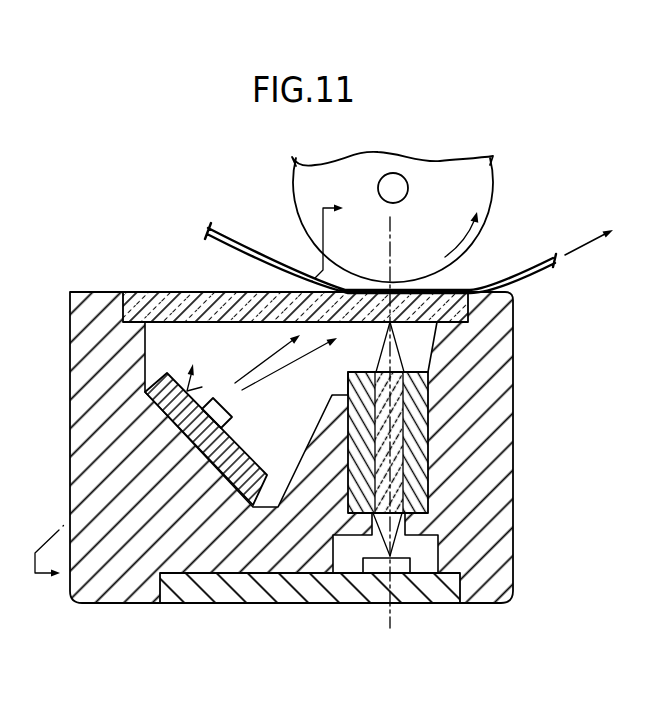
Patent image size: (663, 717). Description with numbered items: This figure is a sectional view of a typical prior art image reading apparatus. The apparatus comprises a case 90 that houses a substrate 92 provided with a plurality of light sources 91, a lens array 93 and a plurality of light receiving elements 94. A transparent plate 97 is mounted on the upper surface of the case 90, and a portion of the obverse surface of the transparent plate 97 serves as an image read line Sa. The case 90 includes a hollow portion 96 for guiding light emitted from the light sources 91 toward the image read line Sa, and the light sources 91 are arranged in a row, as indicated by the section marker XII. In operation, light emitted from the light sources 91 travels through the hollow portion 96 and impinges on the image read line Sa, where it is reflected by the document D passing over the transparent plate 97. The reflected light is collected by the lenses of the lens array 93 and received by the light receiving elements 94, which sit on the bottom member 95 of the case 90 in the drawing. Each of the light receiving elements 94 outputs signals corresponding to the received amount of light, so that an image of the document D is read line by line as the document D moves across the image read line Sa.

The case 90 is at (502, 428).
The light sources 91 is at (229, 413).
The substrate 92 is at (240, 430).
The lens array 93 is at (427, 465).
The light receiving elements 94 is at (410, 563).
The sensor substrate plate 95 is at (430, 593).
The hollow portion 96 is at (222, 348).
The transparent plate 97 is at (167, 303).
The image read line Sa is at (390, 293).
The document D is at (530, 264).
The section line XII- XII is at (187, 391).